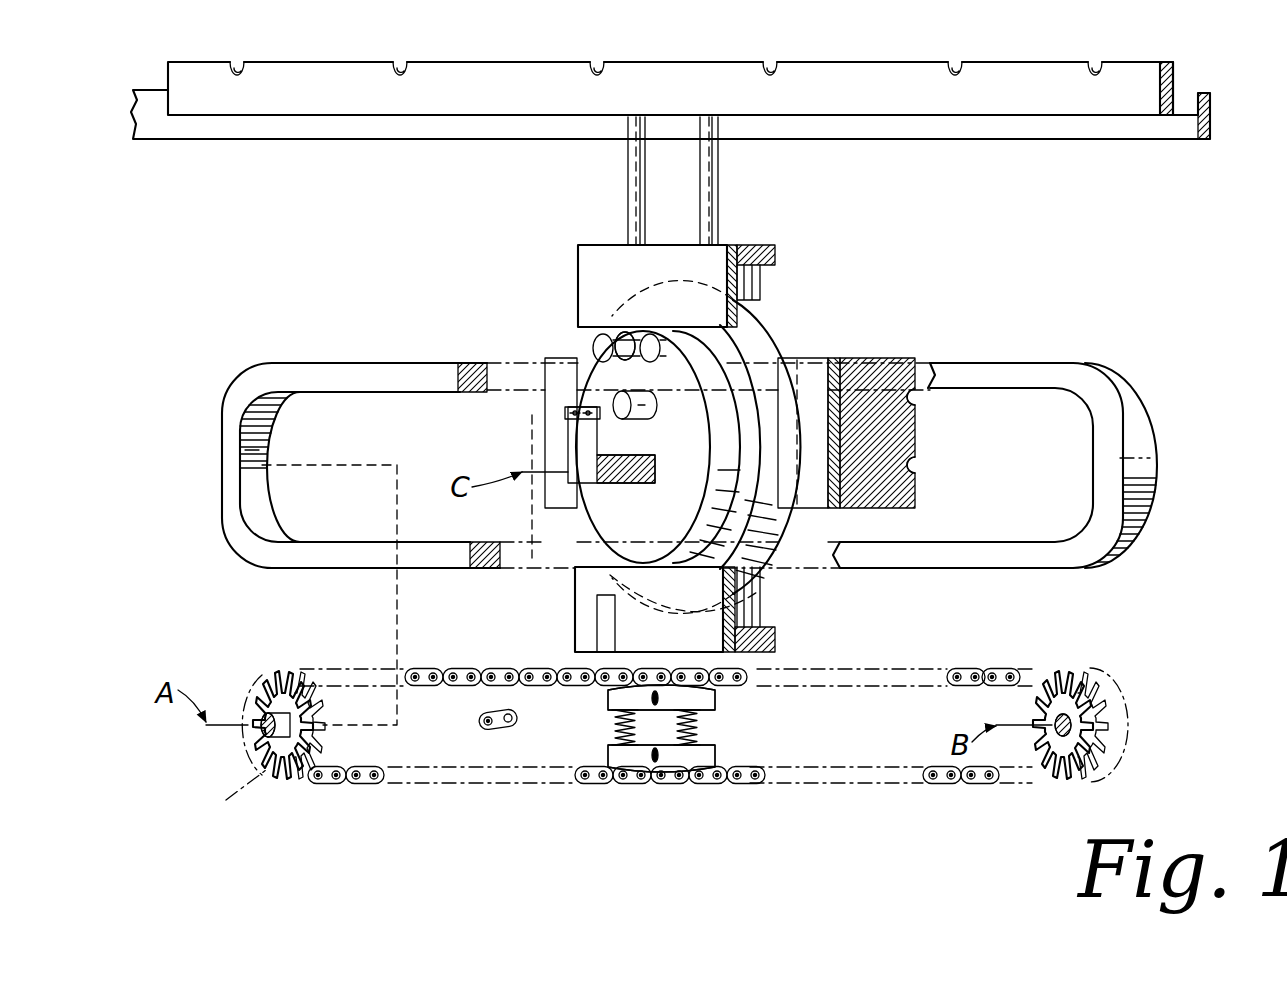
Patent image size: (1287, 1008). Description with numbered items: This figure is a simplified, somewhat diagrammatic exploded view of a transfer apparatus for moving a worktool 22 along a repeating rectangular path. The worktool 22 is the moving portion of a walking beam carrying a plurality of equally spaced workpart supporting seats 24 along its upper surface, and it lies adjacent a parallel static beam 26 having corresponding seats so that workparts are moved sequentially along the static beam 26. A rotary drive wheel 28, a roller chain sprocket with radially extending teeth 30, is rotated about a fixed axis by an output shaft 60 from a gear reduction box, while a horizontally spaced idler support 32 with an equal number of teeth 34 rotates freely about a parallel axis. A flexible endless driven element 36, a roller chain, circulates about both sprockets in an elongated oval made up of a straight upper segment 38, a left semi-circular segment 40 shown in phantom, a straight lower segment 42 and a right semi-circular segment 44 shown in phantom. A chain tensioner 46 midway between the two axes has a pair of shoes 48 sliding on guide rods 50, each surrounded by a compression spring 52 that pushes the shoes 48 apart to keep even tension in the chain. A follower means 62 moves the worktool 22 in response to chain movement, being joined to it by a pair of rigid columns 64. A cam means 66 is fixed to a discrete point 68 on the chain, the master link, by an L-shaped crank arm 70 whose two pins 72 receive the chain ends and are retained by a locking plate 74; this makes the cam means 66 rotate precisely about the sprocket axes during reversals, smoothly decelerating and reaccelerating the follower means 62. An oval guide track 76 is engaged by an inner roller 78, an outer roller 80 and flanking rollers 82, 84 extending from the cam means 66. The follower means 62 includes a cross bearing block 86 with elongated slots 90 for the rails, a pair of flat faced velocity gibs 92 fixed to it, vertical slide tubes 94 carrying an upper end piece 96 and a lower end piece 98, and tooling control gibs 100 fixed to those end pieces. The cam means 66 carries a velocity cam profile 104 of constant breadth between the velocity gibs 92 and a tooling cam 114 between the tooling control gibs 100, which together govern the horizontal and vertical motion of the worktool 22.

The worktool 22 is at (1212, 76).
The workpart supporting seats 24 is at (395, 78).
The static beam 26 is at (1211, 140).
The rotary drive wheel 28 is at (292, 748).
The teeth 30 is at (312, 690).
The idler support 32 is at (1056, 748).
The teeth 34 is at (1046, 690).
The flexible endless driven element 36 is at (702, 786).
The straight upper segment 38 is at (465, 668).
The left semi-circular segment 40 is at (226, 797).
The straight lower segment 42 is at (635, 770).
The right semi-circular segment 44 is at (1102, 692).
The chain tensioner 46 is at (717, 700).
The shoes 48 is at (607, 704).
The guide rods 50 is at (614, 725).
The compression spring 52 is at (628, 728).
The output shaft 60 is at (280, 716).
The follower means 62 is at (780, 242).
The rigid columns 64 is at (706, 228).
The cam means 66 is at (772, 312).
The discrete point 68 is at (490, 730).
The L-shaped crank arm 70 is at (616, 485).
The pins 72 is at (585, 417).
The locking plate 74 is at (482, 720).
The oval guide track 76 is at (1036, 365).
The inner roller 78 is at (648, 412).
The outer roller 80 is at (627, 332).
The flanking roller 82 is at (596, 349).
The flanking roller 84 is at (655, 348).
The cross bearing block 86 is at (880, 358).
The elongated slots 90 is at (910, 466).
The velocity gibs 92 is at (548, 506).
The slide tubes 94 is at (758, 605).
The upper end piece 96 is at (743, 247).
The lower end piece 98 is at (776, 640).
The tooling control gibs 100 is at (578, 266).
The velocity cam profile 104 is at (775, 342).
The tooling cam 114 is at (683, 560).